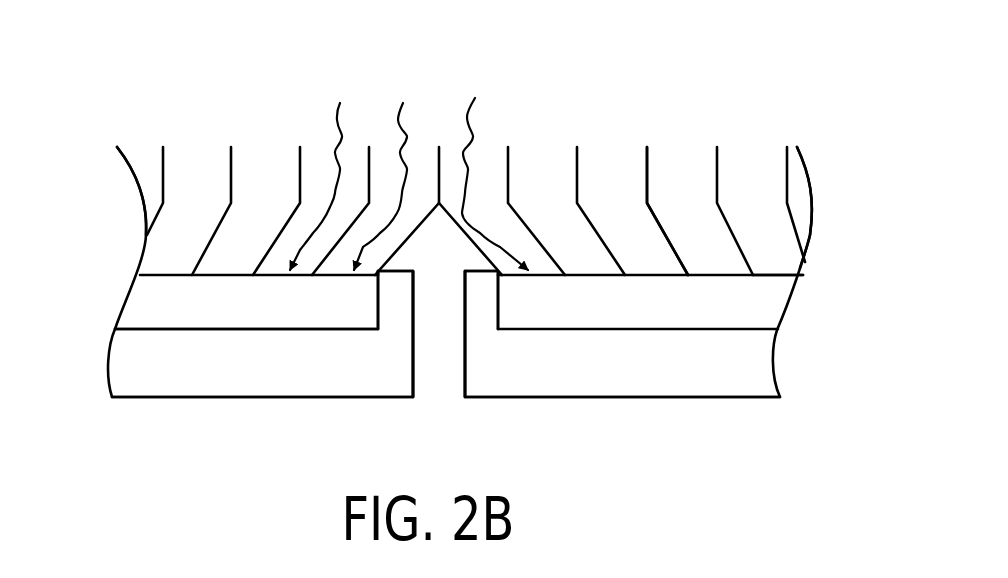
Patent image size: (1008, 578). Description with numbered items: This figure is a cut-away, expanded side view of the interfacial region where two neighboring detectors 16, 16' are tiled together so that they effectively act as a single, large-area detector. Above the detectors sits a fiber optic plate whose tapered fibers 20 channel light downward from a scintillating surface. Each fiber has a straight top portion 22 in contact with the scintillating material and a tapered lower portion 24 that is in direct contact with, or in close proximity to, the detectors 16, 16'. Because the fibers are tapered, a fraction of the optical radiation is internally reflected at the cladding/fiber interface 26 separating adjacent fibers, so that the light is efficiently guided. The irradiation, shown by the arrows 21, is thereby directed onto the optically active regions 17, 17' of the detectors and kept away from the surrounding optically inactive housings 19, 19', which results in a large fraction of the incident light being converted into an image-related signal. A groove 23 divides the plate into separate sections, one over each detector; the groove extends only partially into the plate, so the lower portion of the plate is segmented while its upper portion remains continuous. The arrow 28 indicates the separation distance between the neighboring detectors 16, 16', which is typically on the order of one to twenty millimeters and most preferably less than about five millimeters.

The detector 16 is at (260, 316).
The detector 16' is at (638, 316).
The optically active region 17 is at (223, 291).
The optically active region 17' is at (678, 310).
The housing 19 is at (228, 334).
The housing 19' is at (651, 351).
The tapered fibers 20 is at (143, 174).
The arrows indicating irradiation 21 is at (302, 100).
The straight top portions 22 is at (772, 182).
The groove 23 is at (443, 233).
The tapered lower portions 24 is at (793, 260).
The cladding/fiber interface 26 is at (647, 139).
The arrow indicating separation distance 28 is at (414, 362).